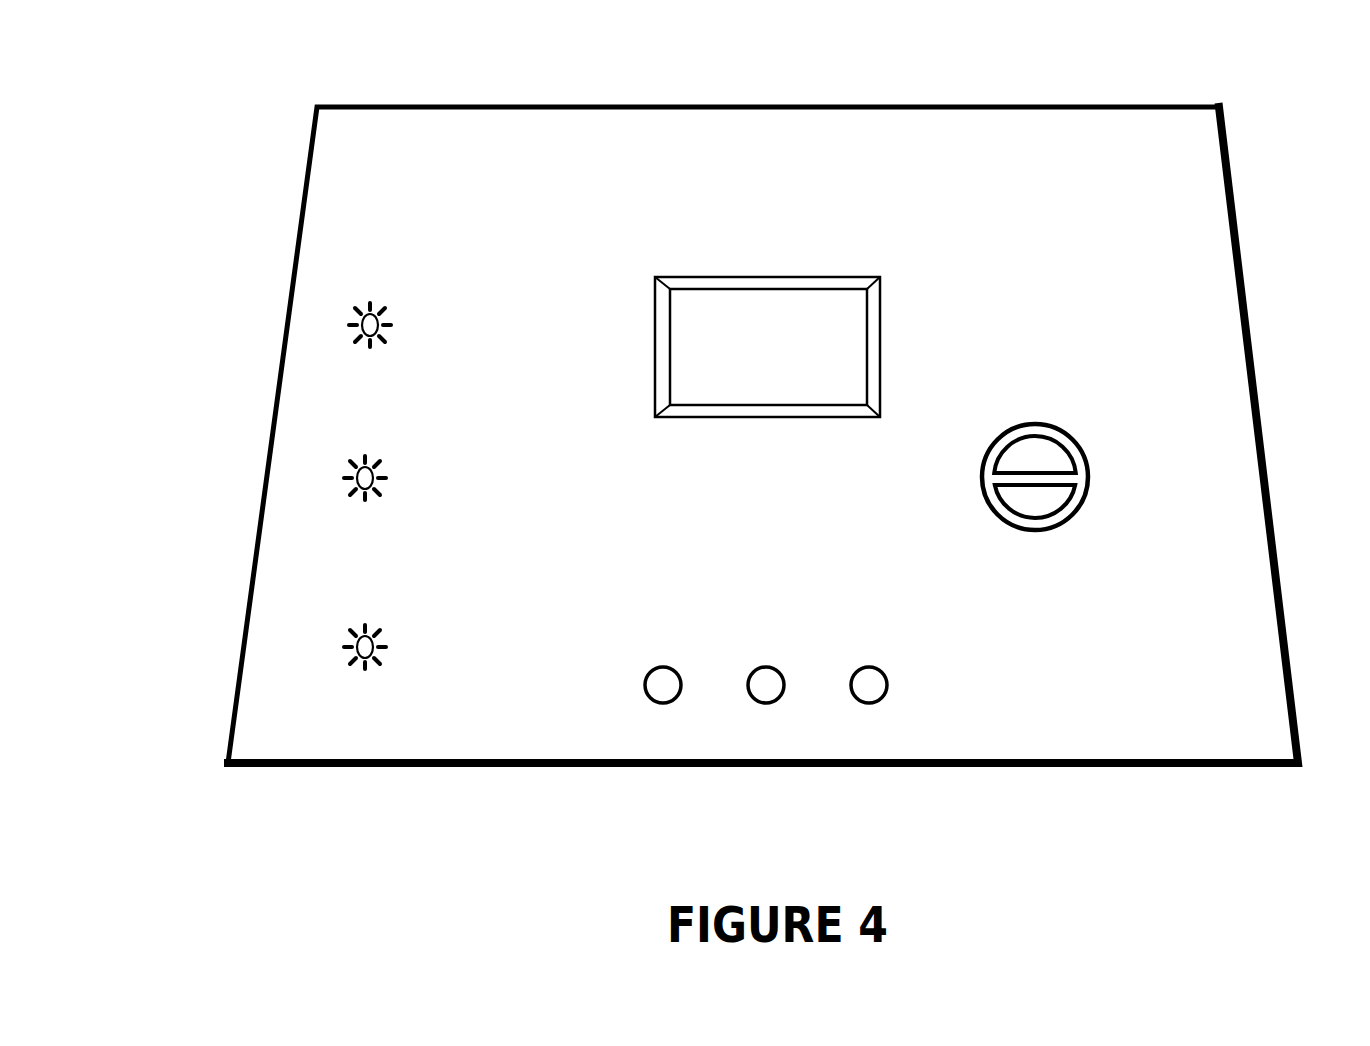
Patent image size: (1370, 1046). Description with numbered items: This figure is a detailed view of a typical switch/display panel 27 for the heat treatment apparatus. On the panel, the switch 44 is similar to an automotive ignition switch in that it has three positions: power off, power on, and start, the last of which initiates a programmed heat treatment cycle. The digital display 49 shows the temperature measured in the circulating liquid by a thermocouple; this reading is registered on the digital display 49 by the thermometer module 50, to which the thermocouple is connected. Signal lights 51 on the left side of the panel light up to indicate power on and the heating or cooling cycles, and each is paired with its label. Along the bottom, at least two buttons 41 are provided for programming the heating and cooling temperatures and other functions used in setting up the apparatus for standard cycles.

The switch/display panel 27 is at (377, 766).
The buttons 41 is at (682, 692).
The switch 44 is at (1075, 437).
The digital display 49 is at (837, 355).
The thermometer module 50 is at (738, 277).
The signal lights 51 is at (343, 316).